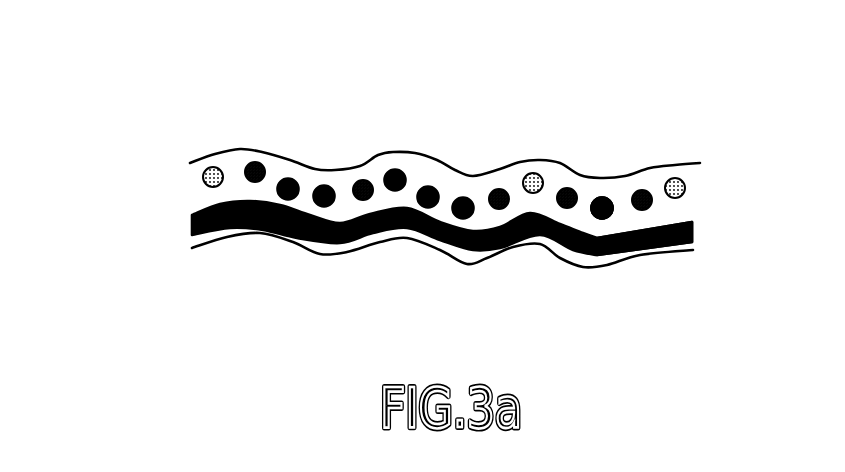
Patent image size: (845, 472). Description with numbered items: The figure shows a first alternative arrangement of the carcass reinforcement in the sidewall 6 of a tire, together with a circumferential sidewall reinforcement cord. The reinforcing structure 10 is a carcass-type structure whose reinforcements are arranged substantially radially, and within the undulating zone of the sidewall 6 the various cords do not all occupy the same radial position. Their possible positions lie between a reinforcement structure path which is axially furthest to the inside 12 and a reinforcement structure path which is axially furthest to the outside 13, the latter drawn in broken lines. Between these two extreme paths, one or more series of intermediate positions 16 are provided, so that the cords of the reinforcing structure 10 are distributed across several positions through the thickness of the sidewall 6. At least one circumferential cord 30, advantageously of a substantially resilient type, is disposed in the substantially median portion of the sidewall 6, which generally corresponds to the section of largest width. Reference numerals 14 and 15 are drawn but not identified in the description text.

The sidewall 6 is at (623, 220).
The reinforcing structure 10 is at (604, 199).
The reinforcement structure path axially furthest to the inside 12 is at (594, 211).
The reinforcement structure path axially furthest to the outside 13 is at (247, 163).
The lower layer 14 is at (467, 265).
The top layer 15 is at (258, 153).
The intermediate positions 16 is at (278, 186).
The circumferential cord 30 is at (694, 228).